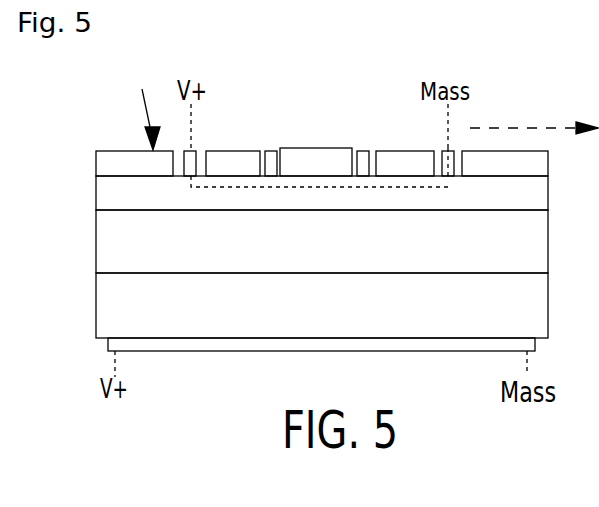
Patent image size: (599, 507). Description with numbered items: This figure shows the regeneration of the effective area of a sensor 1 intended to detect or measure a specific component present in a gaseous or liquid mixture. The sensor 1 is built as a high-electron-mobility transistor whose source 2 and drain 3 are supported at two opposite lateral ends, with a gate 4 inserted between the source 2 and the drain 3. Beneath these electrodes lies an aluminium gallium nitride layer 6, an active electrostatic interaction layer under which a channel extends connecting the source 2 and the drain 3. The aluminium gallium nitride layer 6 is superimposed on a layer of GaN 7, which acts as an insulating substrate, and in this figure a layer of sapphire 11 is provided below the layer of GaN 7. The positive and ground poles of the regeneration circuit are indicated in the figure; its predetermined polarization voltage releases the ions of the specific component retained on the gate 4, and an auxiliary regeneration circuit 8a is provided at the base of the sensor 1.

The sensor 1 is at (149, 104).
The source 2 is at (130, 165).
The drain 3 is at (313, 158).
The gate 4 is at (234, 160).
The layer of Al0.3Ga0.7N 6 is at (117, 196).
The layer of GaN 7 is at (122, 242).
The auxiliary regeneration circuit 8a is at (248, 343).
The layer of sapphire 11 is at (119, 310).